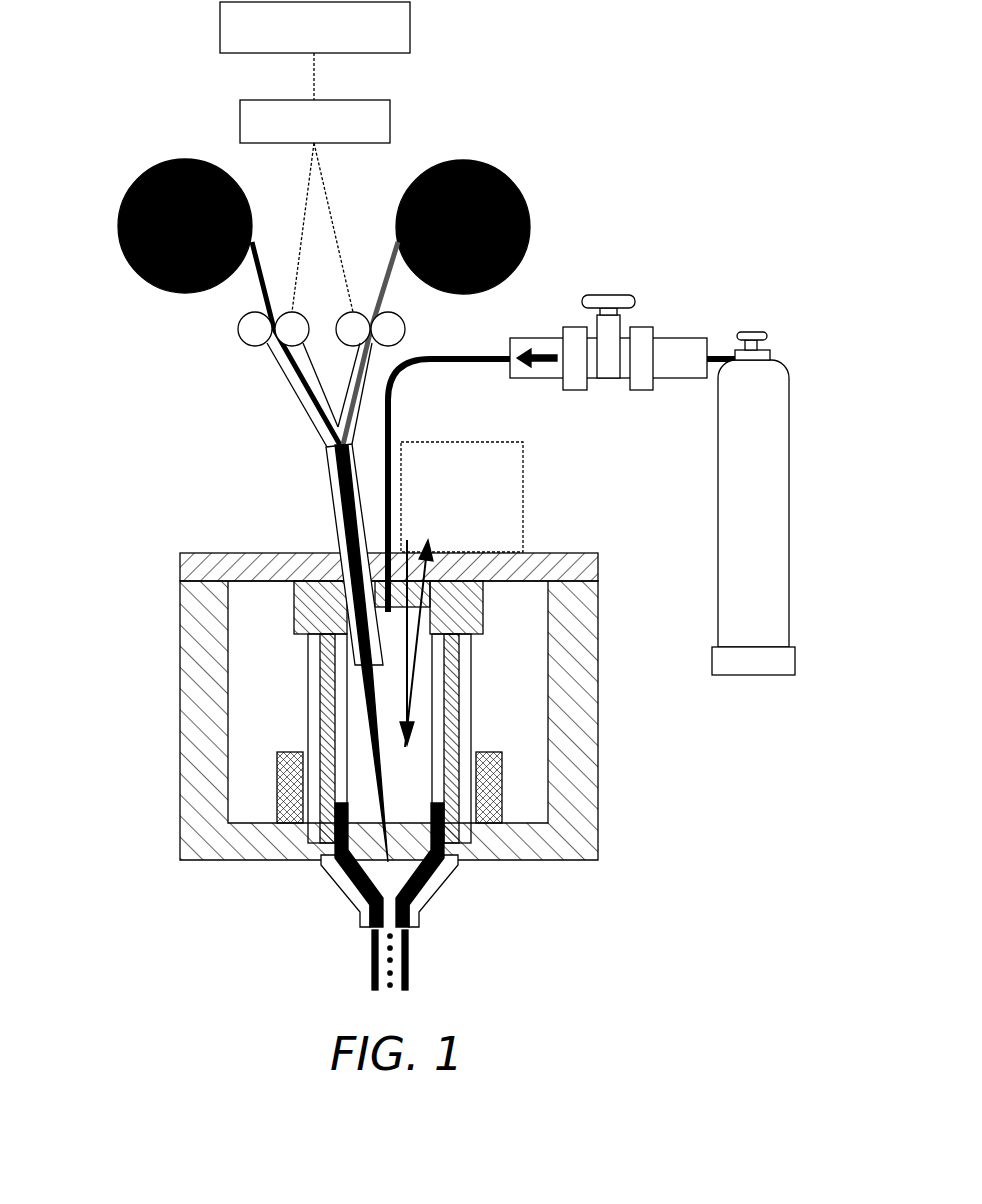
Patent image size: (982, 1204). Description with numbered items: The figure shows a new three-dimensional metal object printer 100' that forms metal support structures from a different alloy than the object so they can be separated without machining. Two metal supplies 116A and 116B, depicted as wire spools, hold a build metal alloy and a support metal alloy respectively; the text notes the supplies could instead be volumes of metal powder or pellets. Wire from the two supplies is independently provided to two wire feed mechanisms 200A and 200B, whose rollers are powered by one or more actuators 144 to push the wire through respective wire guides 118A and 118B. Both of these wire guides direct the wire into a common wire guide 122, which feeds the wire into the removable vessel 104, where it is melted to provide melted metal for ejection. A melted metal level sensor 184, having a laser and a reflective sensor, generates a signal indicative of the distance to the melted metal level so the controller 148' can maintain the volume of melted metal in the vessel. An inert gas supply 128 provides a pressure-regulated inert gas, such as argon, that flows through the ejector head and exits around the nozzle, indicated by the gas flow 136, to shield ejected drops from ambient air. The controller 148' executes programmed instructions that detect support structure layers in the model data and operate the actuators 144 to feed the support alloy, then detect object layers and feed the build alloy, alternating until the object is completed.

The 3D metal object printer 100' is at (675, 151).
The removable vessel 104 is at (402, 828).
The build metal alloy supply 116A is at (152, 167).
The support metal alloy supply 116B is at (491, 160).
The wire guide 118A is at (287, 383).
The wire guide 118B is at (373, 370).
The common wire guide 122 is at (338, 528).
The inert gas supply 128 is at (718, 477).
The gas flow 136 is at (433, 568).
The actuators 144 is at (390, 120).
The controller 148' is at (350, 27).
The melted metal level sensor 184 is at (461, 474).
The wire feed mechanism 200A is at (238, 330).
The wire feed mechanism 200B is at (398, 320).